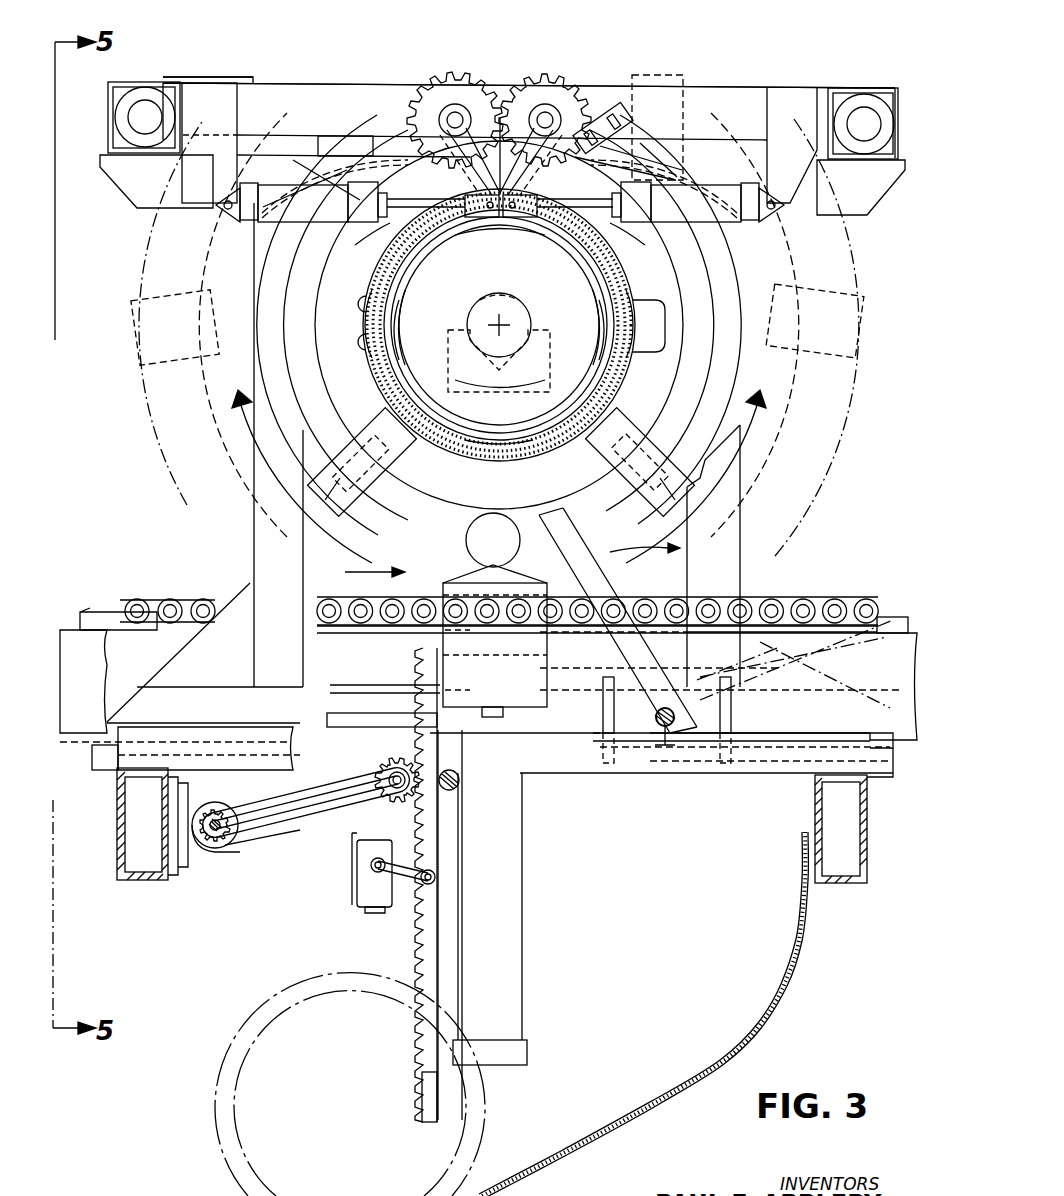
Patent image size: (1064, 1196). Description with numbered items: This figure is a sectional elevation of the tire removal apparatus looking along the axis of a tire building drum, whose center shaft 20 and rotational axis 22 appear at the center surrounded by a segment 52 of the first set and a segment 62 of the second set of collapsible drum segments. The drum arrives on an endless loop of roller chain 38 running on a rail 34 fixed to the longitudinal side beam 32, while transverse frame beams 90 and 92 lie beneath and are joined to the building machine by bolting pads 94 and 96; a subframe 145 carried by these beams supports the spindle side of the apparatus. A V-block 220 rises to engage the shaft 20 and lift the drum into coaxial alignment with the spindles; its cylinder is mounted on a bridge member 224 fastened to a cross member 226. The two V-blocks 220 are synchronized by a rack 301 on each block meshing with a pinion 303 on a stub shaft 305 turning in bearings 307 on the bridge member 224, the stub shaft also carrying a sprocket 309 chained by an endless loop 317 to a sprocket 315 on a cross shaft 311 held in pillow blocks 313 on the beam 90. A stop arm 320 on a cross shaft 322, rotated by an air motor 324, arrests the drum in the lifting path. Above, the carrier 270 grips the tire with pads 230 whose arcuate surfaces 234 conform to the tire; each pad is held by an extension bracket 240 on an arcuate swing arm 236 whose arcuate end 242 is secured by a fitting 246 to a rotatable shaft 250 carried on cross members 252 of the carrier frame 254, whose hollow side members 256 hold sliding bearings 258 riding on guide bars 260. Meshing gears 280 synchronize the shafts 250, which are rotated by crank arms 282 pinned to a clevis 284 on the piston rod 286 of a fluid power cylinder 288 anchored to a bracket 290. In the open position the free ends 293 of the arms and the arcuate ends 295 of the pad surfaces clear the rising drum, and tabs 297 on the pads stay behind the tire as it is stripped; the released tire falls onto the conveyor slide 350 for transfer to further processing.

The center shaft 20 is at (468, 298).
The rotational axis 22 is at (505, 296).
The side beam 32 is at (62, 635).
The rail 34 is at (95, 610).
The endless loop of roller chain 38 is at (150, 598).
The segment 52 is at (499, 308).
The segment 62 is at (410, 275).
The beam 90 is at (112, 875).
The beam 92 is at (870, 865).
The bolting pad 94 is at (95, 760).
The bolting pad 96 is at (90, 733).
The subframe 145 is at (250, 485).
The V-block 220 is at (583, 783).
The bridge member 224 is at (400, 712).
The cross member 226 is at (110, 770).
The pad 230 is at (368, 268).
The arcuate surface 234 is at (368, 323).
The arcuate swing arm 236 is at (145, 275).
The extension bracket 240 is at (320, 168).
The arcuate end 242 is at (655, 115).
The fitting 246 is at (612, 115).
The rotatable shaft 250 is at (455, 112).
The cross member 252 is at (286, 90).
The carrier frame 254 is at (146, 78).
The hollow side member 256 is at (110, 106).
The sliding bearing 258 is at (140, 128).
The guide bar 260 is at (140, 130).
The carrier 270 is at (720, 78).
The gear 280 is at (500, 112).
The crank arm 282 is at (470, 180).
The clevis 284 is at (485, 220).
The piston rod 286 is at (494, 245).
The fluid power cylinder 288 is at (265, 225).
The bracket 290 is at (215, 100).
The free end 293 is at (395, 500).
The arcuate end 295 is at (490, 462).
The tab 297 is at (563, 325).
The rack 301 is at (418, 935).
The pinion 303 is at (380, 755).
The stub shaft 305 is at (398, 797).
The bearing 307 is at (365, 715).
The sprocket 309 is at (370, 795).
The cross shaft 311 is at (222, 835).
The pillow block 313 is at (205, 855).
The sprocket 315 is at (345, 828).
The endless loop of roller chain 317 is at (345, 835).
The stop arm 320 is at (580, 580).
The cross shaft 322 is at (660, 748).
The air motor 324 is at (775, 745).
The conveyor slide 350 is at (680, 1075).